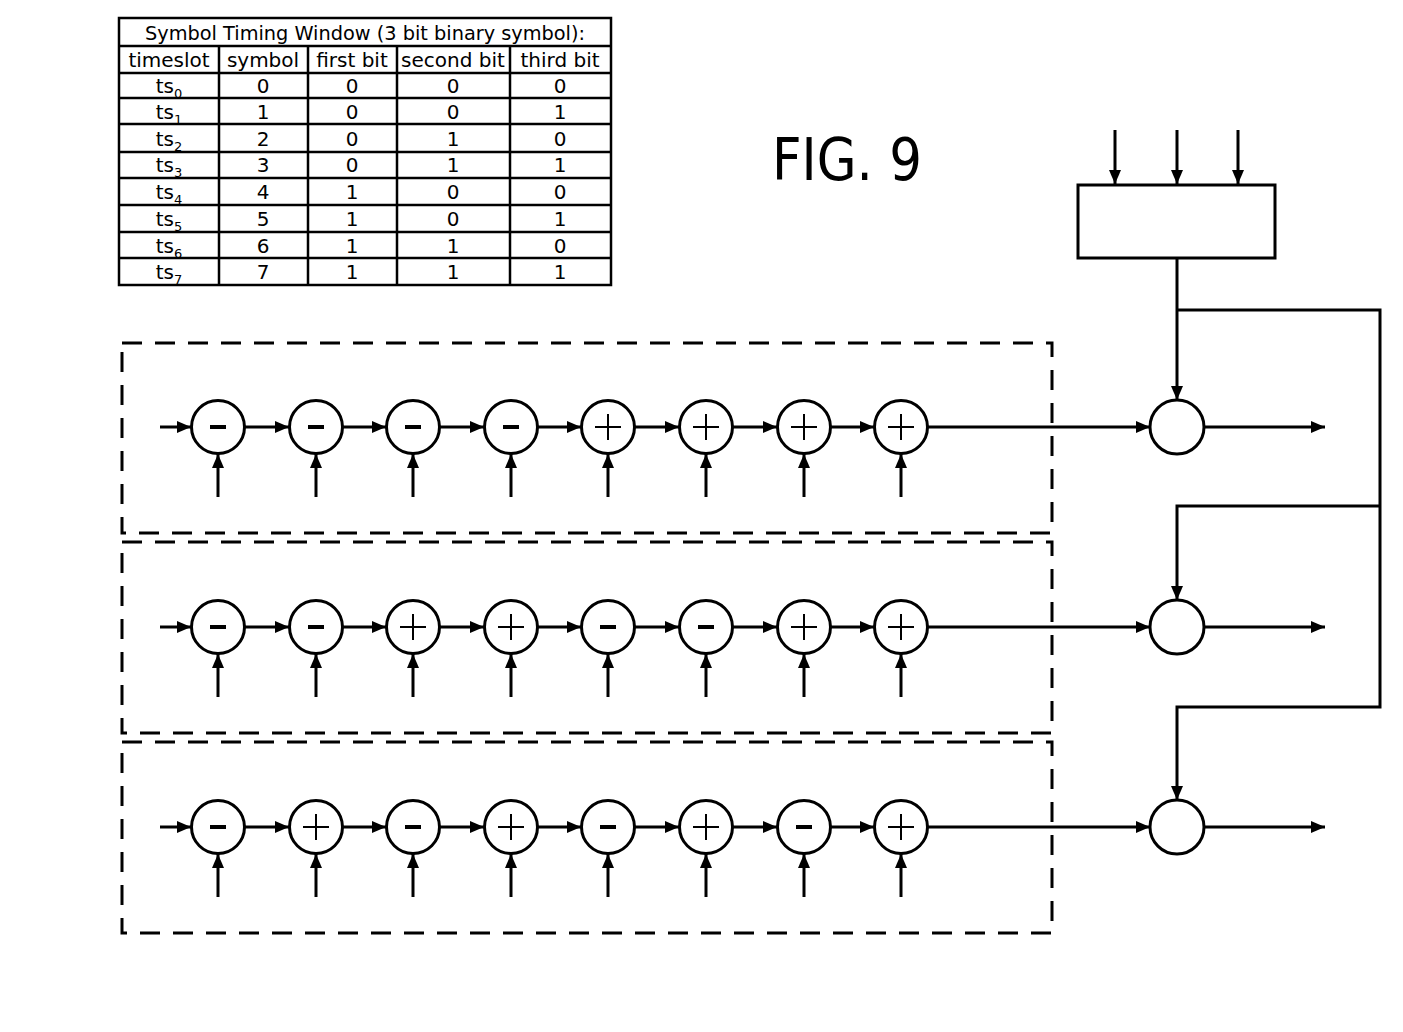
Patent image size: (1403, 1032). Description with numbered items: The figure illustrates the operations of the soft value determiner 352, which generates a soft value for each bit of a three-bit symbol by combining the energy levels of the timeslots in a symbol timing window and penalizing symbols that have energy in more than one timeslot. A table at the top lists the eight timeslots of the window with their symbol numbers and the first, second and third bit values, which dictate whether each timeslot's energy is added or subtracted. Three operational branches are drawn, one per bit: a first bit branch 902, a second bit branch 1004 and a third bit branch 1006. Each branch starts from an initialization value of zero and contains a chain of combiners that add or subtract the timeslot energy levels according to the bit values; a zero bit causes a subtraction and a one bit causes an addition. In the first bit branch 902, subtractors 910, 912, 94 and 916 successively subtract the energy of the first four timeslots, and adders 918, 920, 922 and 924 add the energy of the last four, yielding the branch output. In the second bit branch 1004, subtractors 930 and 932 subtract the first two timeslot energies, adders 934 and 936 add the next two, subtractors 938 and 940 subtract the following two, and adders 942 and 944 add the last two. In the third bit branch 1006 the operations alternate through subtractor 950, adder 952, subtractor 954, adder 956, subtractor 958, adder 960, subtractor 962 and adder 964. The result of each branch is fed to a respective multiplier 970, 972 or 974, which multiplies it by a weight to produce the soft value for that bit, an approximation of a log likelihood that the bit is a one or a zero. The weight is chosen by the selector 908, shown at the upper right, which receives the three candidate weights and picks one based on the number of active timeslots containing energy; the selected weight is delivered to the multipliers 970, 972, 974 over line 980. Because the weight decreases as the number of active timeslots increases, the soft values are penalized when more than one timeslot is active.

The soft value determiner 352 is at (1338, 94).
The selector 908 is at (1176, 178).
The line 980 is at (1176, 288).
The first bit branch 902 is at (636, 438).
The second bit branch 1004 is at (636, 637).
The third bit branch 1006 is at (636, 837).
The subtractor 910 is at (199, 447).
The combiner 912 is at (297, 447).
The first bit branch timeslot 2 subtractor 94 is at (394, 447).
The subtractor 916 is at (492, 447).
The adder 918 is at (589, 447).
The adder 920 is at (687, 447).
The adder 922 is at (785, 447).
The adder 924 is at (882, 447).
The subtractor 930 is at (199, 647).
The subtractor 932 is at (297, 647).
The adder 934 is at (394, 647).
The adder 936 is at (492, 647).
The subtractor 938 is at (589, 647).
The subtractor 940 is at (687, 647).
The adder 942 is at (785, 647).
The adder 944 is at (882, 647).
The subtractor 950 is at (199, 847).
The adder 952 is at (297, 847).
The subtractor 954 is at (394, 847).
The adder 956 is at (492, 847).
The subtractor 958 is at (589, 847).
The adder 960 is at (687, 847).
The subtractor 962 is at (785, 847).
The adder 964 is at (882, 847).
The multiplier 970 is at (1158, 448).
The multiplier 972 is at (1158, 648).
The multiplier 974 is at (1158, 848).